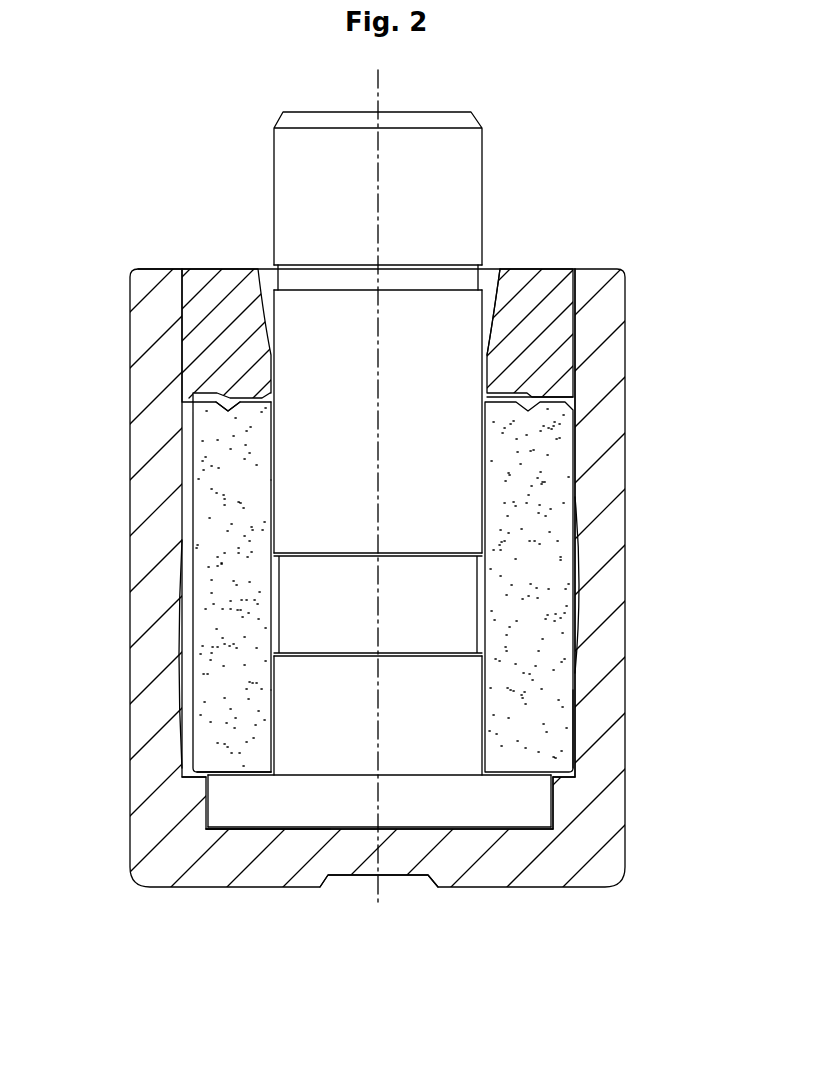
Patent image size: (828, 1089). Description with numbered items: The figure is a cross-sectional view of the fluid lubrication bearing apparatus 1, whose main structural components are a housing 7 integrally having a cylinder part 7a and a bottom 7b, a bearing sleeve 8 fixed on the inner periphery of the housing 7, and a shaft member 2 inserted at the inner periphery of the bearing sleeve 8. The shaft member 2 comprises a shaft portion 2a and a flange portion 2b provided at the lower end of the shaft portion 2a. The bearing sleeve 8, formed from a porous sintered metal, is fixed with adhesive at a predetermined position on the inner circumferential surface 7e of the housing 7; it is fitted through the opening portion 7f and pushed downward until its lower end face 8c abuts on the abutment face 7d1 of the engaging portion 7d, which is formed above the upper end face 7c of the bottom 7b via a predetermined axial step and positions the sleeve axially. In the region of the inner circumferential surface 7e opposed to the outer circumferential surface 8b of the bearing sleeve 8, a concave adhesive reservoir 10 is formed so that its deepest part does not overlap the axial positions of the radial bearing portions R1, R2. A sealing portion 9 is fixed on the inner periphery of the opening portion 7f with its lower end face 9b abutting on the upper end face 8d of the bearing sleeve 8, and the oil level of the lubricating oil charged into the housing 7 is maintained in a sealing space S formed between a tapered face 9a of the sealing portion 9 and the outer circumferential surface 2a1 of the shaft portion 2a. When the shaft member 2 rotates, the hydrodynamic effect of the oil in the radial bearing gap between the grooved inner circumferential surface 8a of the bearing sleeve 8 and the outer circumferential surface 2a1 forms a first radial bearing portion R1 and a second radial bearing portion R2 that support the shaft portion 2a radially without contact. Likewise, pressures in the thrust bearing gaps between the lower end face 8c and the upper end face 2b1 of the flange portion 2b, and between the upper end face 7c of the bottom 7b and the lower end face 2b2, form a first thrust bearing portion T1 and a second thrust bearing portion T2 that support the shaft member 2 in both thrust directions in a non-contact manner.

The fluid lubrication bearing apparatus 1 is at (643, 152).
The shaft member 2 is at (494, 103).
The shaft portion 2a is at (518, 297).
The outer circumferential surface of the shaft portion 2a1 is at (517, 777).
The flange portion 2b is at (527, 808).
The upper end face of the flange portion 2b1 is at (237, 773).
The lower end face of the flange portion 2b2 is at (532, 827).
The housing 7 is at (637, 277).
The cylinder part 7a is at (612, 372).
The bottom 7b is at (455, 868).
The upper end face of the bottom 7c is at (267, 827).
The engaging portion 7d is at (545, 762).
The abutment face 7d1 is at (566, 772).
The inner circumferential surface of the housing 7e is at (183, 462).
The opening portion 7f is at (162, 268).
The bearing sleeve 8 is at (556, 467).
The inner circumferential surface of the bearing sleeve 8a is at (573, 496).
The outer circumferential surface of the bearing sleeve 8b is at (575, 713).
The lower end face of the bearing sleeve 8c is at (232, 777).
The upper end face of the bearing sleeve 8d is at (243, 392).
The sealing portion 9 is at (567, 353).
The tapered face 9a is at (495, 302).
The lower end face of the sealing portion 9b is at (505, 408).
The adhesive reservoir 10 is at (563, 613).
The sealing space S is at (265, 287).
The first radial bearing portion R1 is at (285, 471).
The second radial bearing portion R2 is at (289, 686).
The first thrust bearing portion T1 is at (247, 794).
The second thrust bearing portion T2 is at (298, 813).